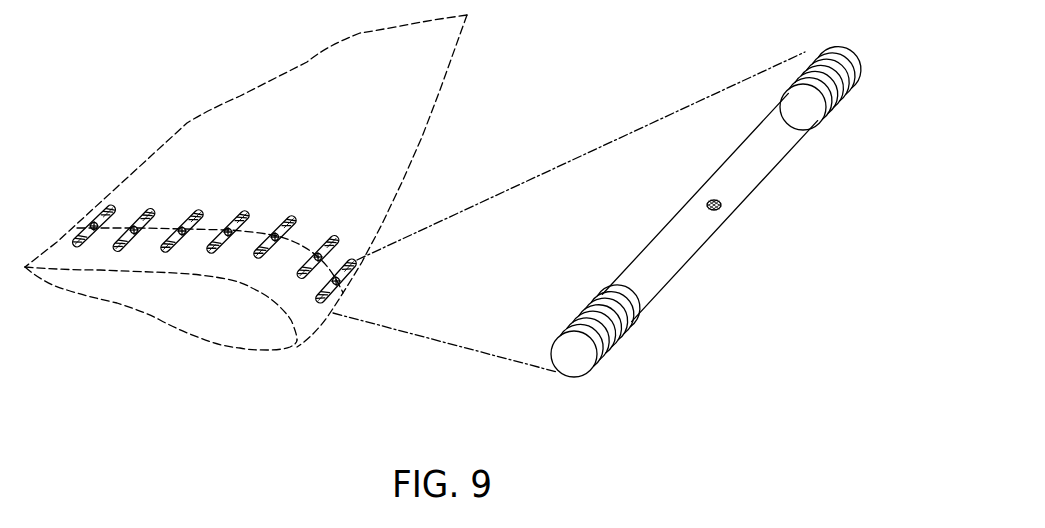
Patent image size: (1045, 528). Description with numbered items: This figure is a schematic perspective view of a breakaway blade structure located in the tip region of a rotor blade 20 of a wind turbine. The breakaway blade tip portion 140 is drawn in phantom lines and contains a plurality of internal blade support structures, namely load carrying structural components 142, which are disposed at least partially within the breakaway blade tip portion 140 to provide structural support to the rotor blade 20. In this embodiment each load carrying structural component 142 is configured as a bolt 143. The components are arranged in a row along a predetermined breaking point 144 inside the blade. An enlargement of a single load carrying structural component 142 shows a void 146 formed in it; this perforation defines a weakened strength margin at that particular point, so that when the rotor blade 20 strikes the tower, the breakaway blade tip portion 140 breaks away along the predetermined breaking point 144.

The rotor blade 20 is at (460, 73).
The breakaway blade tip portion 140 is at (422, 142).
The load carrying structural component 142 is at (756, 125).
The bolt 143 is at (706, 212).
The predetermined breaking point 144 is at (110, 206).
The void 146 is at (230, 228).